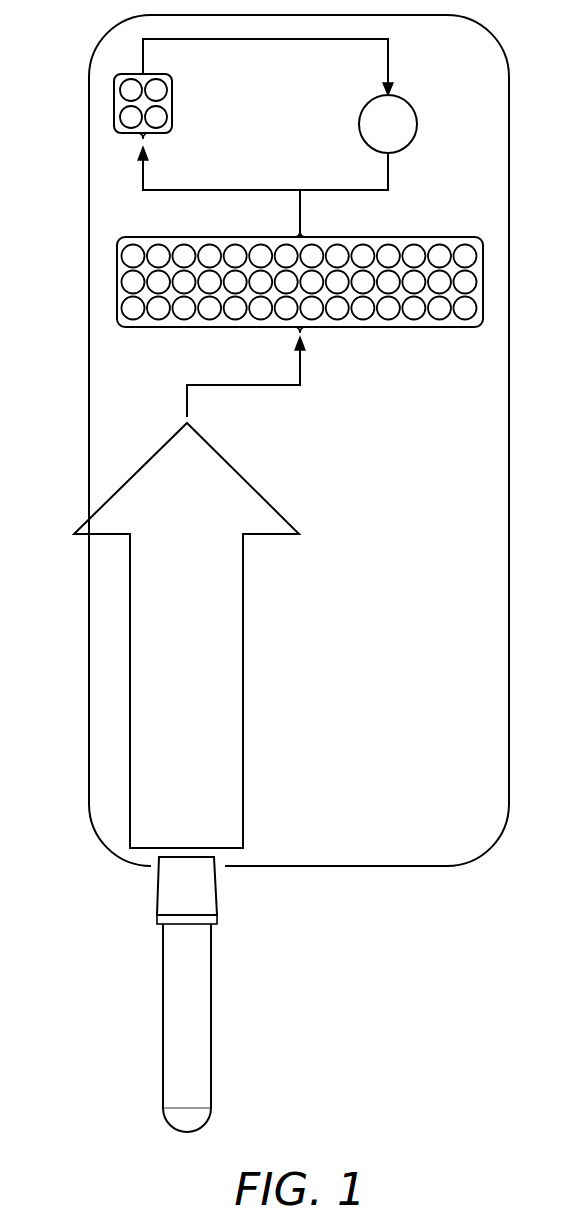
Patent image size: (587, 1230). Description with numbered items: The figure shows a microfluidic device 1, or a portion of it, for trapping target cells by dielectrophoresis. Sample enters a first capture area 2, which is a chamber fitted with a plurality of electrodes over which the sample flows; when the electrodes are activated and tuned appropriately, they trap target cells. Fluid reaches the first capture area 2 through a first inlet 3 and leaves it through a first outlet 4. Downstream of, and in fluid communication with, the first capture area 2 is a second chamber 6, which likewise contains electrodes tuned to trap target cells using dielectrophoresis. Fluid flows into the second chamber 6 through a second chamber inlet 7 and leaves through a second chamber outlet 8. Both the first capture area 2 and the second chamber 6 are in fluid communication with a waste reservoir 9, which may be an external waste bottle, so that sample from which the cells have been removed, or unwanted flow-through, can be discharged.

The microfluidic device 1 is at (89, 617).
The first capture area 2 is at (484, 280).
The first inlet 3 is at (302, 334).
The first outlet 4 is at (302, 228).
The second chamber 6 is at (114, 101).
The second chamber inlet 7 is at (141, 143).
The second chamber outlet 8 is at (141, 70).
The waste reservoir 9 is at (417, 124).